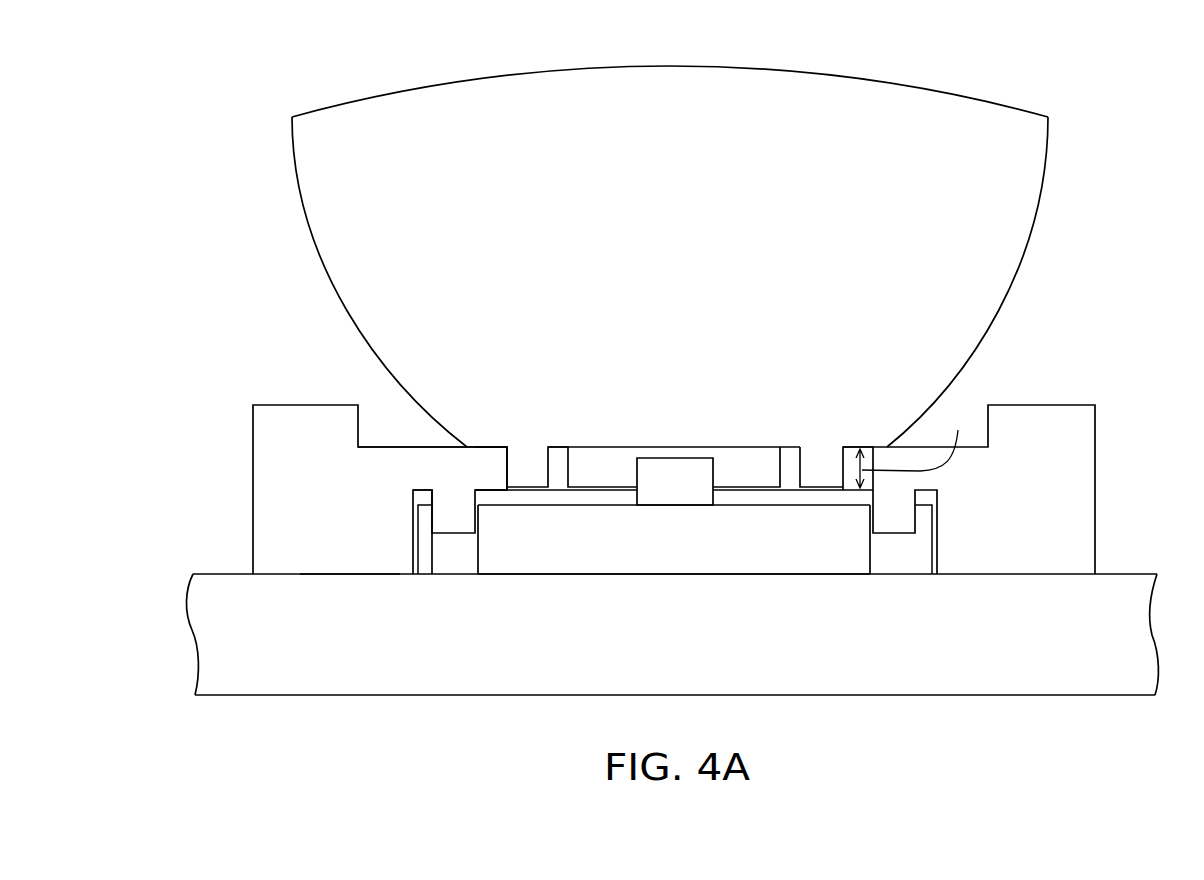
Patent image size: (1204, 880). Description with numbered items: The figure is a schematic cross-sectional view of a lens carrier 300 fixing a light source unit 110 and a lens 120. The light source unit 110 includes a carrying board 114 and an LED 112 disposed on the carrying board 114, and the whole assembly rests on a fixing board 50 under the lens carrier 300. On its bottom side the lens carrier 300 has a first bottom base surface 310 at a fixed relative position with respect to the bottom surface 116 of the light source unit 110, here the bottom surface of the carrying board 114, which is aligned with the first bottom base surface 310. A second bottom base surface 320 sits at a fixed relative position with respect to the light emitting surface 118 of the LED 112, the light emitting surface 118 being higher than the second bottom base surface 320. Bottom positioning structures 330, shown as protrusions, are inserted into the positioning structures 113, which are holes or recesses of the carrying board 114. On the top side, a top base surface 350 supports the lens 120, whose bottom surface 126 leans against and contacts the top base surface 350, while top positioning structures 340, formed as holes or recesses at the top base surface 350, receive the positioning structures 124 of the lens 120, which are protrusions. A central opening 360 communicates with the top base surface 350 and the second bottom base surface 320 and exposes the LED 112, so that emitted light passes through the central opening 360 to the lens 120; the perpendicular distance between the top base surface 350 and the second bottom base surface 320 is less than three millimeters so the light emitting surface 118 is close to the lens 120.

The fixing board 50 is at (1130, 627).
The light source unit 110 is at (768, 620).
The LED 112 is at (678, 490).
The carrying board 114 is at (843, 556).
The positioning structures 113 is at (441, 559).
The bottom surface 116 is at (617, 586).
The light emitting surface 118 is at (691, 446).
The lens 120 is at (891, 98).
The positioning structures 124 is at (818, 463).
The bottom surface 126 is at (407, 447).
The lens carrier 300 is at (1078, 528).
The first bottom base surface 310 is at (354, 584).
The second bottom base surface 320 is at (497, 499).
The bottom positioning structures 330 is at (453, 517).
The top positioning structures 340 is at (840, 460).
The top base surface 350 is at (474, 436).
The central opening 360 is at (576, 456).